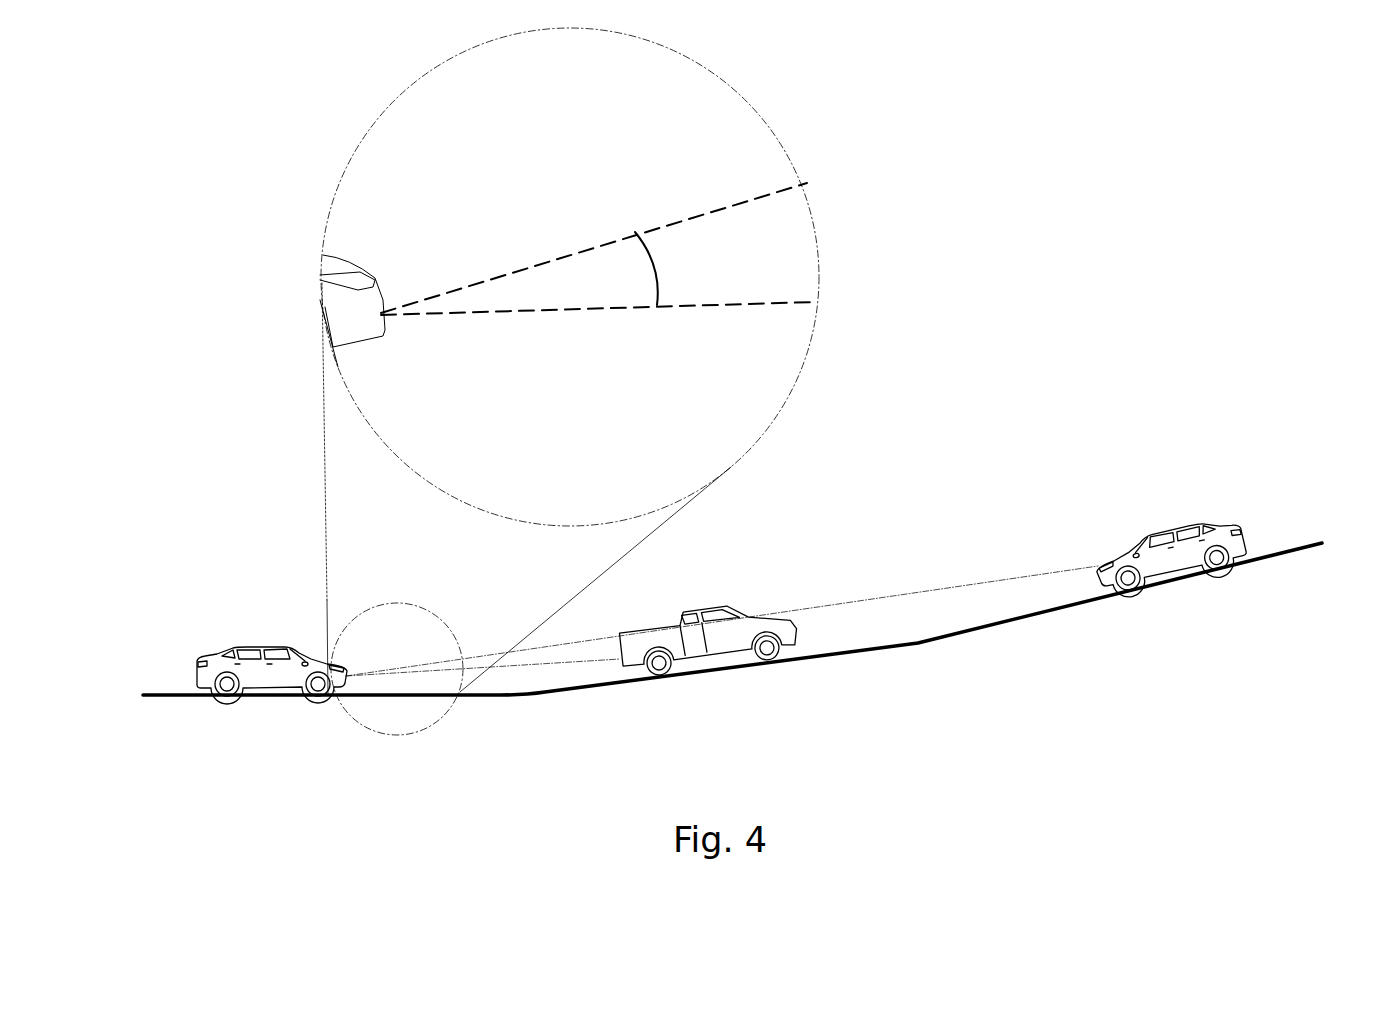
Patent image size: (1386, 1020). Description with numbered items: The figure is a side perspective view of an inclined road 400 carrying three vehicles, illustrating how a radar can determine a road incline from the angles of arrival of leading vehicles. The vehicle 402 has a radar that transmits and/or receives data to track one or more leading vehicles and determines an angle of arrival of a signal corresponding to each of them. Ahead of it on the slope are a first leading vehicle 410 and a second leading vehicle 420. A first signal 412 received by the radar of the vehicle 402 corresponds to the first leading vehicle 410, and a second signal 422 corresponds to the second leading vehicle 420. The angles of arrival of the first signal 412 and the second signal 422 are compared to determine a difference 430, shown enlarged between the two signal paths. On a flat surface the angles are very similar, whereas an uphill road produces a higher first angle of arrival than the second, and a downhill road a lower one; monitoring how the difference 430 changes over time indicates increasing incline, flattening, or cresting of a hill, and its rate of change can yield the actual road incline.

The inclined road 400 is at (913, 645).
The vehicle 402 is at (253, 687).
The first leading vehicle 410 is at (620, 680).
The first signal 412 is at (562, 312).
The second leading vehicle 420 is at (1105, 582).
The second signal 422 is at (552, 258).
The difference 430 is at (653, 263).